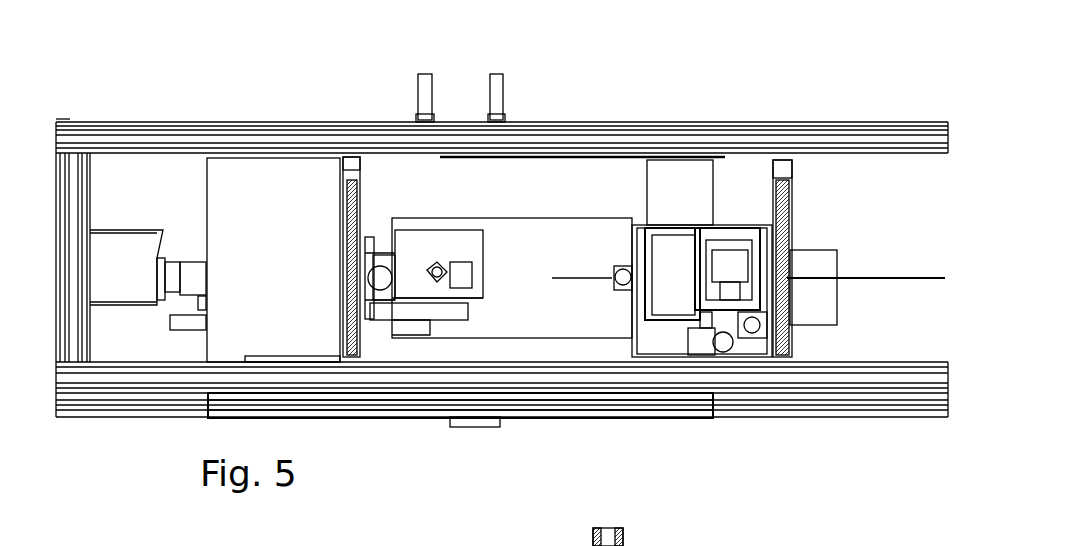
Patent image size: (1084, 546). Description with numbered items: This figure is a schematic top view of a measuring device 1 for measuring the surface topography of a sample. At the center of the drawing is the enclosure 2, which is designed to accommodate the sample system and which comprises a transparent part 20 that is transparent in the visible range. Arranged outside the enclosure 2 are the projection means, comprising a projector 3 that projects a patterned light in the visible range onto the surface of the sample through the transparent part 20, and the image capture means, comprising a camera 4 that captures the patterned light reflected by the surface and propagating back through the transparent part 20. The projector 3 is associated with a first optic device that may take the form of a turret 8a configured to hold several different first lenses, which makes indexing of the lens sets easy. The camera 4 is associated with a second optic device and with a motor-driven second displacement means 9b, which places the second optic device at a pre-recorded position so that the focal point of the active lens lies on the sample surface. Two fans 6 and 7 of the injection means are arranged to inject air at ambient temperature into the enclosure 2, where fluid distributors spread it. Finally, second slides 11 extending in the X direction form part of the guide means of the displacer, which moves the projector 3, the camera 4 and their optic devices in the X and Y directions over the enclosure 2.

The measuring device 1 is at (527, 450).
The enclosure 2 is at (253, 205).
The projector 3 is at (722, 232).
The camera 4 is at (440, 243).
The fan 6 is at (100, 295).
The fan 7 is at (805, 310).
The turret 8a is at (620, 285).
The second displacement means 9b is at (378, 265).
The second slides 11 is at (348, 210).
The transparent part 20 is at (578, 238).